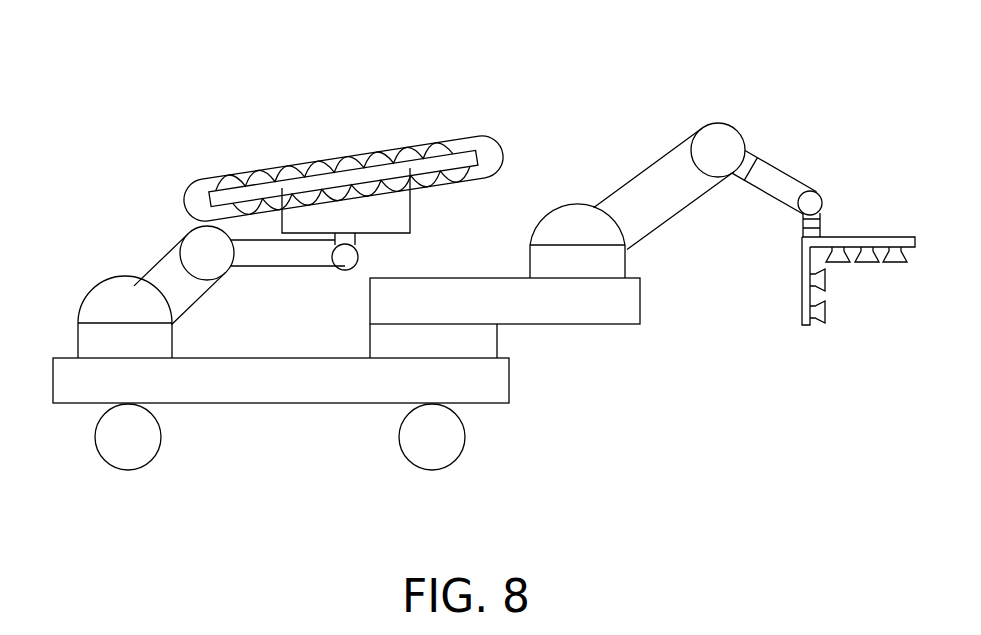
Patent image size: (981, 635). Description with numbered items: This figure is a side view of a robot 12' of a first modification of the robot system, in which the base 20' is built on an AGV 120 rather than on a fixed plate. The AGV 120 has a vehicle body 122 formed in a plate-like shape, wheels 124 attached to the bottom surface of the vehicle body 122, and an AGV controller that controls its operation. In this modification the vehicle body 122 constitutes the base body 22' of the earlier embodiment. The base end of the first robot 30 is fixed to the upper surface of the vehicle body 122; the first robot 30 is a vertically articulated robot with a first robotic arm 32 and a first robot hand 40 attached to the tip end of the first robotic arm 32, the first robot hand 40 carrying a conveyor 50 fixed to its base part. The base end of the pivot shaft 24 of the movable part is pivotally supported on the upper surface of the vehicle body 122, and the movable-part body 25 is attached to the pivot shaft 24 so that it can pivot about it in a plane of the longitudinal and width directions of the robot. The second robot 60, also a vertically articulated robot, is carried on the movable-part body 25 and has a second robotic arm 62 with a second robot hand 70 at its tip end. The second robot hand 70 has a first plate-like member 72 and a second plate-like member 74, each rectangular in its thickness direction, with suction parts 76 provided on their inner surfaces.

The robot 12' is at (475, 279).
The base 20' is at (343, 379).
The base body 22' is at (264, 445).
The pivot shaft 24 is at (488, 337).
The movable-part body 25 is at (585, 307).
The first robot 30 is at (138, 183).
The first robotic arm 32 is at (153, 263).
The first robot hand 40 is at (210, 160).
The conveyor 50 is at (325, 158).
The second robot 60 is at (567, 123).
The second robotic arm 62 is at (657, 160).
The second robot hand 70 is at (893, 205).
The first plate-like member 72 is at (845, 233).
The second plate-like member 74 is at (803, 300).
The suction parts 76 is at (897, 268).
The AGV 120 is at (60, 405).
The vehicle body 122 is at (238, 385).
The wheels 124 is at (133, 468).